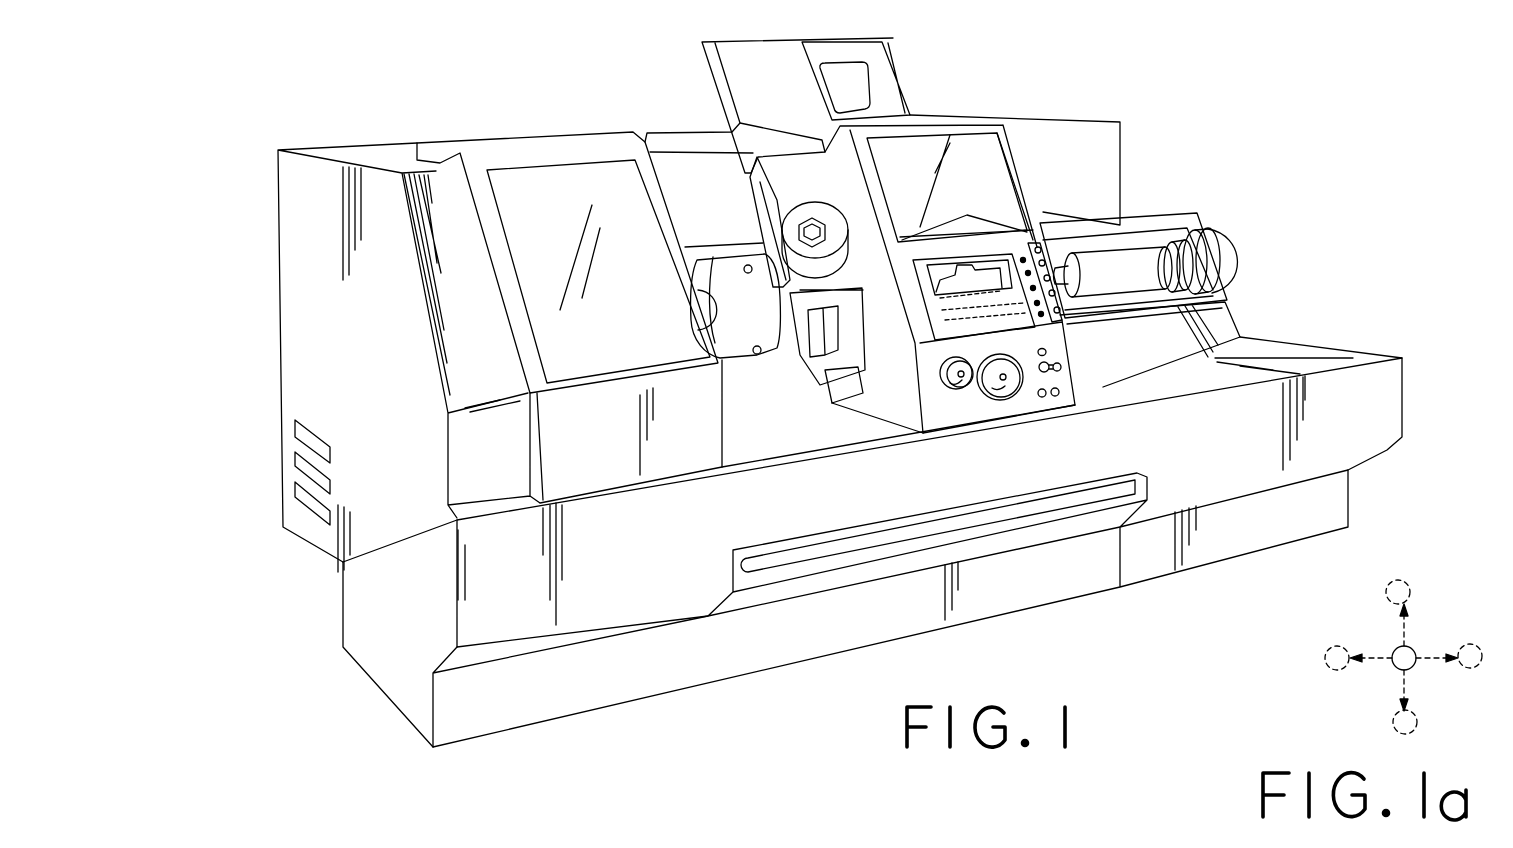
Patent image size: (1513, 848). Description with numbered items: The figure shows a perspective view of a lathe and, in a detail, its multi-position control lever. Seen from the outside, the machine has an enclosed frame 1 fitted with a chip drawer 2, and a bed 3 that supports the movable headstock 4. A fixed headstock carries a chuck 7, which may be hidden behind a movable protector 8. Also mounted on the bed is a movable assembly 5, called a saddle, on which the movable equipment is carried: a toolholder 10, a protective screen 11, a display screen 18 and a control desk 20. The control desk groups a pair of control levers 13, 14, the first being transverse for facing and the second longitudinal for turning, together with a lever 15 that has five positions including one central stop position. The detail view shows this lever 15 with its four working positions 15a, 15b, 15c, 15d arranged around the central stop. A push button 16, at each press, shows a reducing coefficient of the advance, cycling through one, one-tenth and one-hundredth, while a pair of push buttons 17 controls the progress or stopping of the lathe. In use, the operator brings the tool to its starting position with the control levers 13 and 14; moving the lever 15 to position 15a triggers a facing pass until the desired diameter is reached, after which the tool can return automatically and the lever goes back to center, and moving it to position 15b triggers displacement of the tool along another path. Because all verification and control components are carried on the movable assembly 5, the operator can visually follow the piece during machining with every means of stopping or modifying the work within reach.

In FIG. 1, the enclosed frame 1 is at (322, 178).
In FIG. 1, the chip drawer 2 is at (855, 636).
In FIG. 1, the bed 3 is at (1177, 217).
In FIG. 1, the movable headstock 4 is at (1132, 267).
In FIG. 1, the movable assembly (saddle) 5 is at (925, 85).
In FIG. 1, the chuck 7 is at (733, 262).
In FIG. 1, the movable protector 8 is at (553, 153).
In FIG. 1, the toolholder 10 is at (815, 213).
In FIG. 1, the protective screen 11 is at (1030, 152).
In FIG. 1, the control lever (transverse, facing) 13 is at (967, 380).
In FIG. 1, the control lever (longitudinal, turning) 14 is at (1010, 380).
In FIG. 1, the lever 15 is at (1073, 367).
In FIG. 1a, the lever 15 is at (1407, 660).
In FIG. 1a, the lever position 15a is at (1330, 670).
In FIG. 1a, the lever position 15b is at (1406, 582).
In FIG. 1a, the lever position 15c is at (1480, 660).
In FIG. 1a, the lever position 15d is at (1420, 715).
In FIG. 1, the push button 16 is at (1053, 353).
In FIG. 1, the pair of push buttons 17 is at (1050, 407).
In FIG. 1, the display screen 18 is at (850, 57).
In FIG. 1, the control desk 20 is at (930, 343).